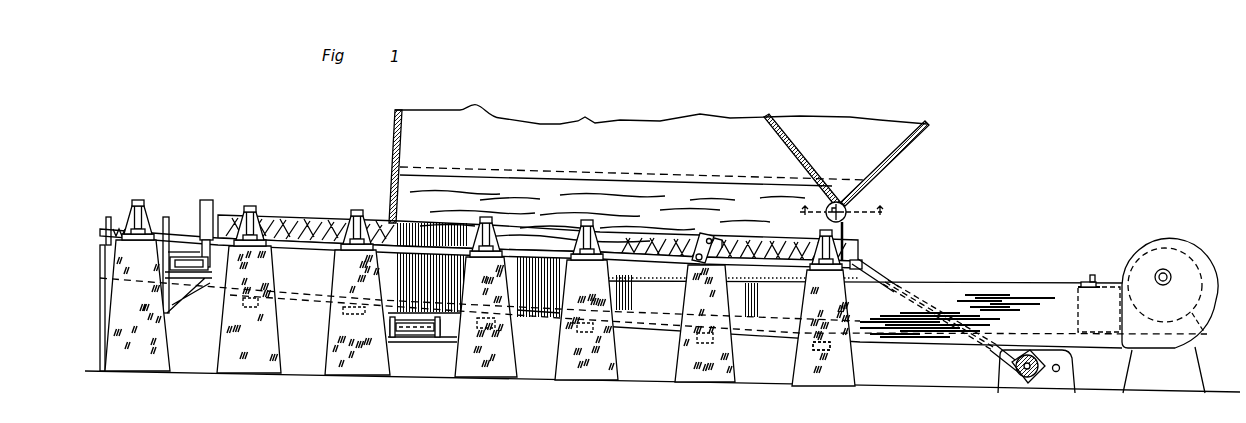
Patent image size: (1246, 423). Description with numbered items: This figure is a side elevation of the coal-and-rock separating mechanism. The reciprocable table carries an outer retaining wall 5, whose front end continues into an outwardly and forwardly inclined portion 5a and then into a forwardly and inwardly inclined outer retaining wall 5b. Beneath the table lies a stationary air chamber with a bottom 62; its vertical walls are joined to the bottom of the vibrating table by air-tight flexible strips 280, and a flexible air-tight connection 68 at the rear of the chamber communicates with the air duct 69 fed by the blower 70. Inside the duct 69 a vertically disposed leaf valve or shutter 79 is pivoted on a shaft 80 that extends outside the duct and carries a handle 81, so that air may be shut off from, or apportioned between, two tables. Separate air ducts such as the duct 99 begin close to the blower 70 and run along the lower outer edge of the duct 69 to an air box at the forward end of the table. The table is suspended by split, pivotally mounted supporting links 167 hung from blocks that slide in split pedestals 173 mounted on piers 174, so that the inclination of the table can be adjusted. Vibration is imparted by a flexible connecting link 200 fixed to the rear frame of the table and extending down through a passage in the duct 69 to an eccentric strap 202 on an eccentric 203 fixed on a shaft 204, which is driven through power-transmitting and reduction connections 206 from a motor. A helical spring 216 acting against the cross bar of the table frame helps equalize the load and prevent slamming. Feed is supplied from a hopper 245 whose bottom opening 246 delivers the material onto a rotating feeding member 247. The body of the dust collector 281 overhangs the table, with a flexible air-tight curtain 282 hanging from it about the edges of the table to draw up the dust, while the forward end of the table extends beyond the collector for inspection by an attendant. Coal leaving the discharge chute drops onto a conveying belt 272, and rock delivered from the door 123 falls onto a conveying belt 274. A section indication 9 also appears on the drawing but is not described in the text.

The outer retaining wall 5 is at (627, 236).
The outwardly and forwardly inclined portion 5a is at (512, 222).
The outer retaining wall 5b is at (340, 222).
The section line 9 is at (840, 212).
The bottom 62 is at (629, 328).
The flexible air-tight connection 68 is at (852, 360).
The air duct 69 is at (943, 300).
The blower 70 is at (1152, 237).
The leaf valve or shutter 79 is at (1108, 297).
The shaft 80 is at (1078, 298).
The handle 81 is at (1090, 274).
The air duct 99 is at (305, 302).
The door 123 is at (190, 232).
The supporting link 167 is at (699, 238).
The split pedestal 173 is at (268, 218).
The pier 174 is at (150, 338).
The flexible connecting link 200 is at (881, 268).
The eccentric strap 202 is at (1012, 364).
The eccentric 203 is at (1026, 380).
The shaft 204 is at (1017, 368).
The power-transmitting and reduction gearing or connections 206 is at (1050, 378).
The helical spring 216 is at (118, 229).
The hopper 245 is at (893, 140).
The fuel-supplying opening 246 is at (843, 203).
The rotating feeding member 247 is at (823, 220).
The conveying belt 272 is at (408, 335).
The conveying belt 274 is at (183, 297).
The air-tight flexible strip 280 is at (308, 249).
The body of the dust collector 281 is at (420, 133).
The flexible air-tight curtain 282 is at (395, 168).